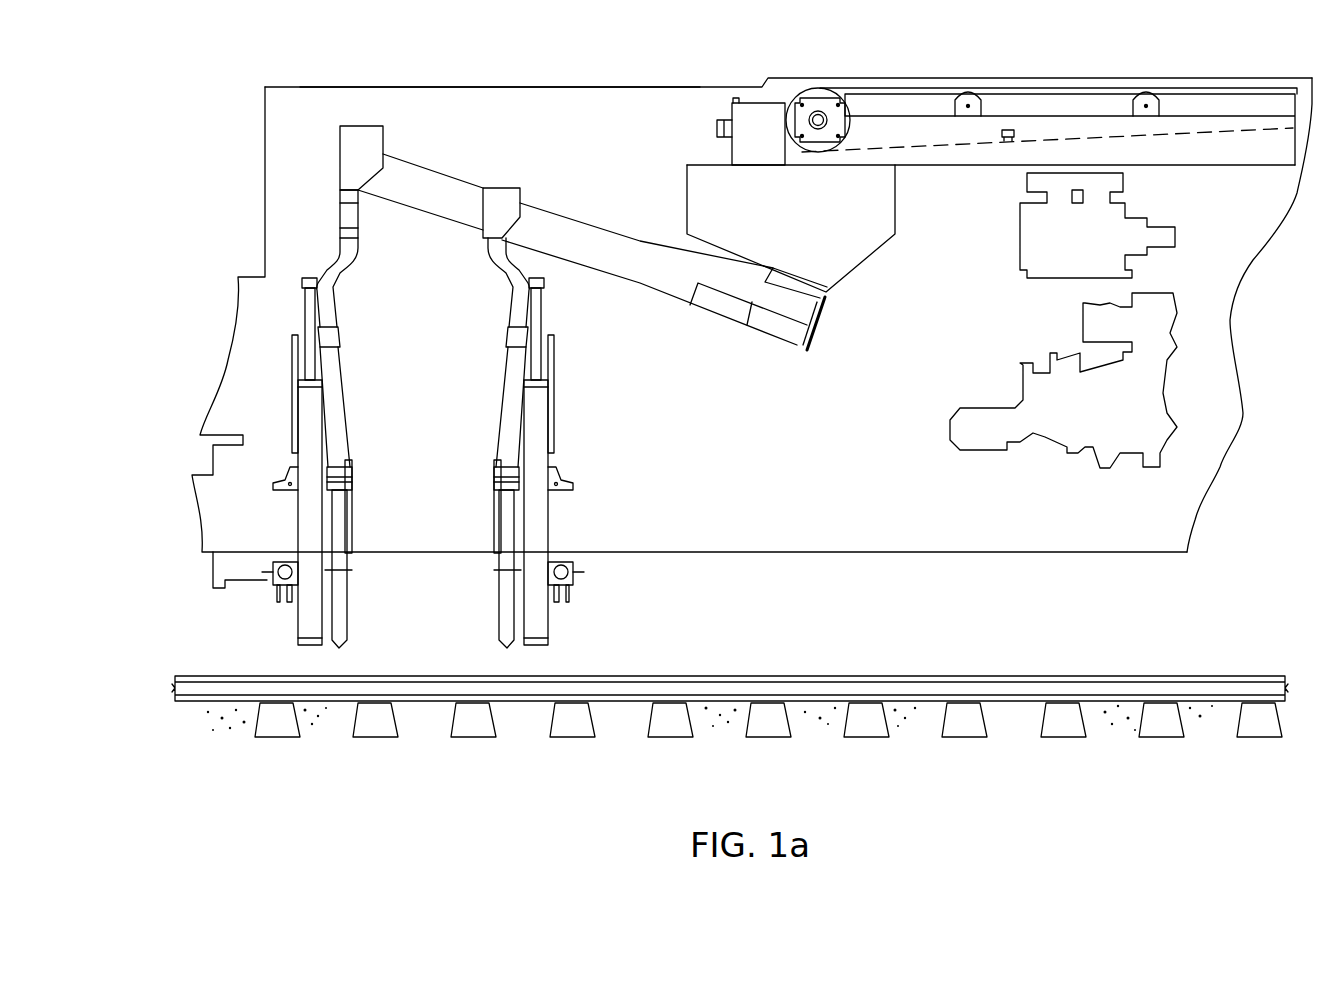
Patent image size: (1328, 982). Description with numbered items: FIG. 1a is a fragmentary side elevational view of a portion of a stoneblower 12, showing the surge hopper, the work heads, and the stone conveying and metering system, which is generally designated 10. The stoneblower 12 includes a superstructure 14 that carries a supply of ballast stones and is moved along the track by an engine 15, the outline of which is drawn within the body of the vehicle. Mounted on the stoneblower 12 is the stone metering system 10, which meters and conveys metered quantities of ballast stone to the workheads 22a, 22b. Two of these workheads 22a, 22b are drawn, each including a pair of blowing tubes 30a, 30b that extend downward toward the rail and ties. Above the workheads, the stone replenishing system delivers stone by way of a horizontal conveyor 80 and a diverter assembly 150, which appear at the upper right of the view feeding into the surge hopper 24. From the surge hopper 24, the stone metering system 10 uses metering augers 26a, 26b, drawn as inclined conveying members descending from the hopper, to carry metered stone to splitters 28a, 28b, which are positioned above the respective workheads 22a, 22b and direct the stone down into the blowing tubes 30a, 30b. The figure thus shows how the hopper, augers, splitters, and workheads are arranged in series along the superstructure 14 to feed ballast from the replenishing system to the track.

The stone metering system 10 is at (683, 132).
The stoneblower 12 is at (497, 72).
The superstructure 14 is at (462, 88).
The engine 15 is at (1148, 472).
The workhead 22a is at (339, 443).
The workhead 22b is at (508, 454).
The surge hopper 24 is at (850, 280).
The metering auger 26a is at (585, 217).
The metering auger 26b is at (408, 160).
The splitter 28a is at (505, 182).
The splitter 28b is at (352, 122).
The blowing tube 30a is at (348, 613).
The blowing tube 30b is at (499, 620).
The horizontal conveyor 80 is at (910, 85).
The diverter assembly 150 is at (743, 100).